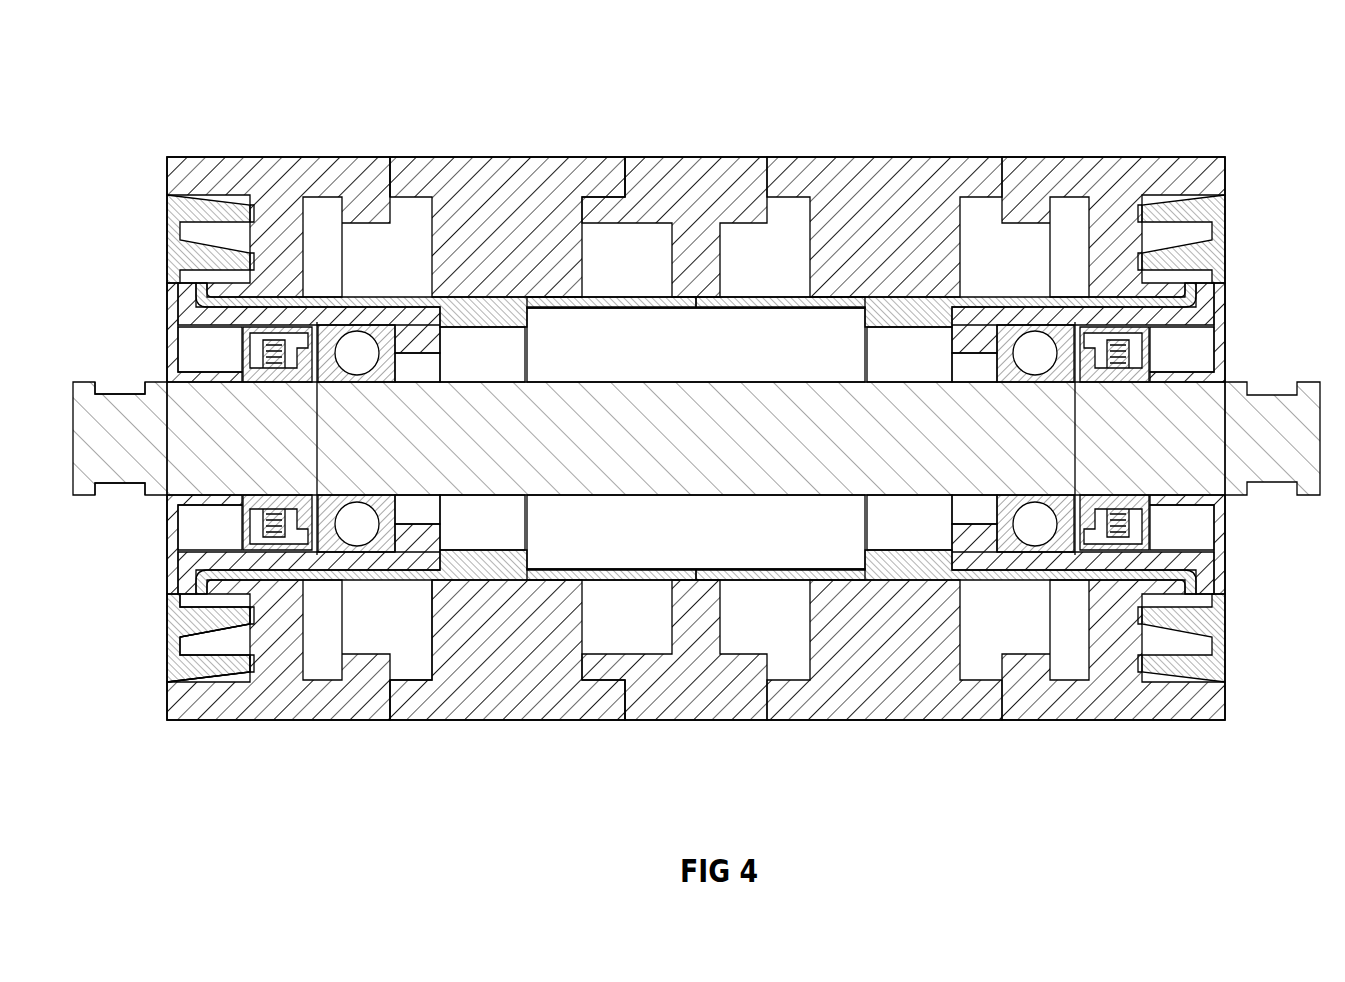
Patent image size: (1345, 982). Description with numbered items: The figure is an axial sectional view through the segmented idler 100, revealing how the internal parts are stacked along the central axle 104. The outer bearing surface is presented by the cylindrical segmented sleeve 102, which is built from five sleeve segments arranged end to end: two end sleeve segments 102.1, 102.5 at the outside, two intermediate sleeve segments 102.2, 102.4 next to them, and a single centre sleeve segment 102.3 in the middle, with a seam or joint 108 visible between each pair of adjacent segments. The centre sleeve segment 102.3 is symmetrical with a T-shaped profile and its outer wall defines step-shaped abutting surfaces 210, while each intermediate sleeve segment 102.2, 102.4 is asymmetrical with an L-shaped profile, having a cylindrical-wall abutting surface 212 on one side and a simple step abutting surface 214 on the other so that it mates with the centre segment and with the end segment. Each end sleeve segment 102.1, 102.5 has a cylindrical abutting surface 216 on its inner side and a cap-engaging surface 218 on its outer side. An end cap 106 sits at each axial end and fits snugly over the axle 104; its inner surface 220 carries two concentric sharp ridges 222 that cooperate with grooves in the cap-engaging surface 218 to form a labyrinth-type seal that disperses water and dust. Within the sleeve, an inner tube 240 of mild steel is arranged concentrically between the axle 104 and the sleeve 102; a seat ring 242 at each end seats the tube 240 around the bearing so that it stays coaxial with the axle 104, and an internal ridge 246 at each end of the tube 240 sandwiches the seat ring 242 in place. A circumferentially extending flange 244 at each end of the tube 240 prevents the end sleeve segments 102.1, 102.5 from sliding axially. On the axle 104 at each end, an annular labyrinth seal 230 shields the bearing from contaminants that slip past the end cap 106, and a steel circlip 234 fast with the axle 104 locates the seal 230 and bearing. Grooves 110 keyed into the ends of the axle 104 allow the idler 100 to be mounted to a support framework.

The segmented idler 100 is at (348, 121).
The segmented sleeve 102 is at (1116, 160).
The end sleeve segment 102.1 is at (262, 157).
The intermediate sleeve segment 102.2 is at (462, 705).
The centre sleeve segment 102.3 is at (692, 705).
The intermediate sleeve segment 102.4 is at (893, 705).
The end sleeve segment 102.5 is at (1100, 703).
The central axle 104 is at (80, 402).
The end cap 106 is at (170, 258).
The joint 108 is at (612, 153).
The groove 110 is at (120, 483).
The abutting surface 210 is at (395, 508).
The abutting surface 212 is at (637, 692).
The abutting surface 214 is at (375, 707).
The abutting surface 216 is at (408, 677).
The cap-engaging surface 218 is at (236, 669).
The inner surface 220 is at (201, 694).
The sharp ridges 222 is at (197, 664).
The labyrinth seal 230 is at (260, 526).
The circlip 234 is at (320, 443).
The inner tube 240 is at (782, 302).
The seat ring 242 is at (410, 320).
The flange 244 is at (182, 286).
The internal ridge 246 is at (500, 318).